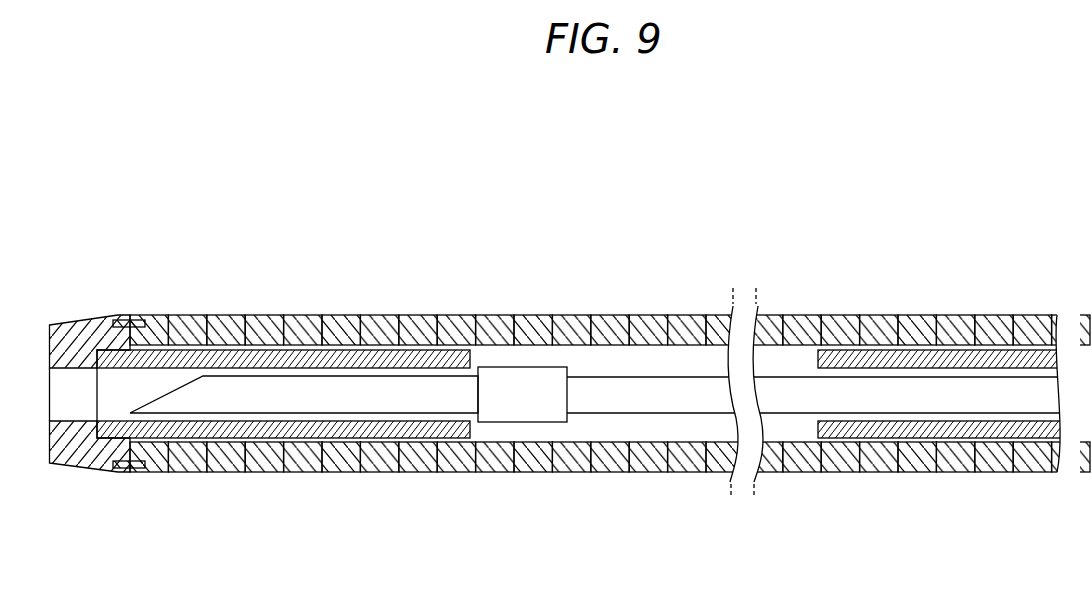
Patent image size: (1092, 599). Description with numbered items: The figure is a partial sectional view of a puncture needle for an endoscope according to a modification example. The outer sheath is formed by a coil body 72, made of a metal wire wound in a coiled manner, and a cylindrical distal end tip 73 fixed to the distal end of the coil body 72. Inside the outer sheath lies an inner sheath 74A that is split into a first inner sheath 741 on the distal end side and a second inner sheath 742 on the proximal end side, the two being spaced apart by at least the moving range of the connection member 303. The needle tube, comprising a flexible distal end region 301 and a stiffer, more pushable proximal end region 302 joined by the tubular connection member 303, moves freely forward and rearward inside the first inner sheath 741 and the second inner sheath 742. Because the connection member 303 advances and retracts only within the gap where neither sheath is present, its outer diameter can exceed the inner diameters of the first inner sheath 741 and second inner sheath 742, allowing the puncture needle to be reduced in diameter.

The coil body 72 is at (188, 465).
The distal end tip 73 is at (78, 457).
The inner sheath 74A is at (581, 289).
The first inner sheath 741 is at (470, 350).
The second inner sheath 742 is at (941, 316).
The distal end region 301 is at (353, 395).
The proximal end region 302 is at (678, 408).
The connection member 303 is at (513, 408).